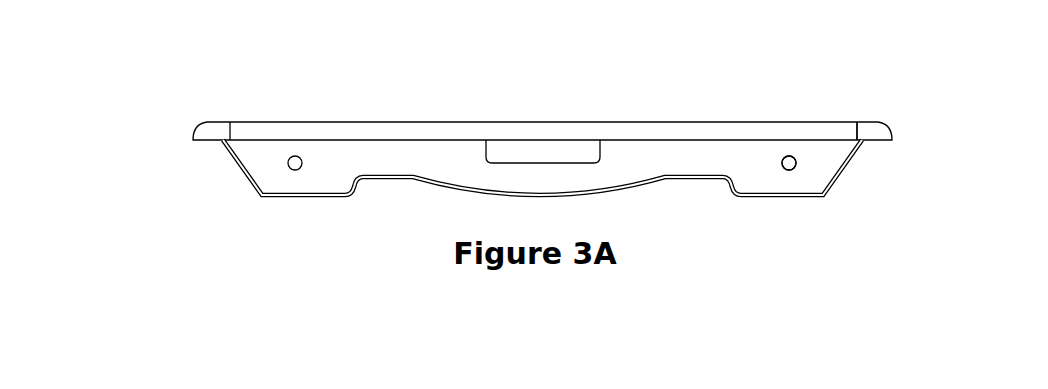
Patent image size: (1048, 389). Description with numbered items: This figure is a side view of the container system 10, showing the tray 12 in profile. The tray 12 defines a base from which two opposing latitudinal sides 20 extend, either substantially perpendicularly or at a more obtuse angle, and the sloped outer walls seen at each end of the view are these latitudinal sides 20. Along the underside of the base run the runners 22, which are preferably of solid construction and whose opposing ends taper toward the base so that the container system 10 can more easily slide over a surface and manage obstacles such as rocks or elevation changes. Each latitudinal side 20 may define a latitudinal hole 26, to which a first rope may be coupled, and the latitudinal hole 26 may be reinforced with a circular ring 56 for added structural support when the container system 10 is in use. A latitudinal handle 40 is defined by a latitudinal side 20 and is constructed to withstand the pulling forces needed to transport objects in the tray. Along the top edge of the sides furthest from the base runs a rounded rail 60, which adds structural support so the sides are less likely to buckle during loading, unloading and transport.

The container system 10 is at (999, 56).
The tray 12 is at (901, 137).
The latitudinal side 20 is at (542, 167).
The runner 22 is at (542, 183).
The latitudinal hole 26 is at (295, 170).
The latitudinal handle 40 is at (543, 151).
The circular ring 56 is at (796, 166).
The rounded rail 60 is at (270, 132).